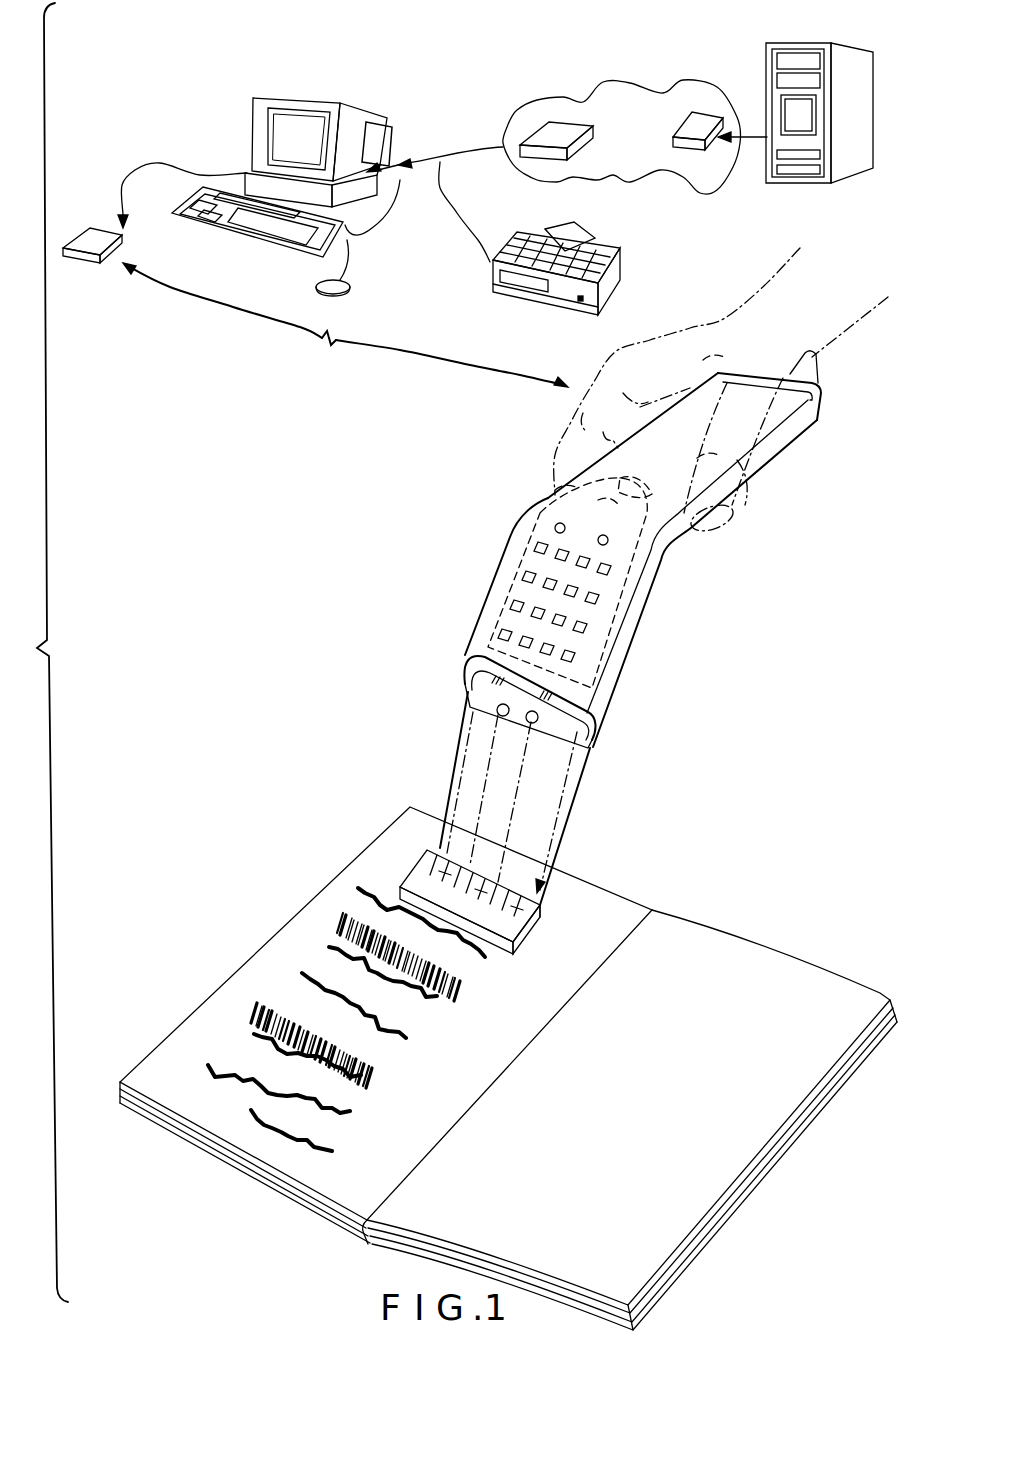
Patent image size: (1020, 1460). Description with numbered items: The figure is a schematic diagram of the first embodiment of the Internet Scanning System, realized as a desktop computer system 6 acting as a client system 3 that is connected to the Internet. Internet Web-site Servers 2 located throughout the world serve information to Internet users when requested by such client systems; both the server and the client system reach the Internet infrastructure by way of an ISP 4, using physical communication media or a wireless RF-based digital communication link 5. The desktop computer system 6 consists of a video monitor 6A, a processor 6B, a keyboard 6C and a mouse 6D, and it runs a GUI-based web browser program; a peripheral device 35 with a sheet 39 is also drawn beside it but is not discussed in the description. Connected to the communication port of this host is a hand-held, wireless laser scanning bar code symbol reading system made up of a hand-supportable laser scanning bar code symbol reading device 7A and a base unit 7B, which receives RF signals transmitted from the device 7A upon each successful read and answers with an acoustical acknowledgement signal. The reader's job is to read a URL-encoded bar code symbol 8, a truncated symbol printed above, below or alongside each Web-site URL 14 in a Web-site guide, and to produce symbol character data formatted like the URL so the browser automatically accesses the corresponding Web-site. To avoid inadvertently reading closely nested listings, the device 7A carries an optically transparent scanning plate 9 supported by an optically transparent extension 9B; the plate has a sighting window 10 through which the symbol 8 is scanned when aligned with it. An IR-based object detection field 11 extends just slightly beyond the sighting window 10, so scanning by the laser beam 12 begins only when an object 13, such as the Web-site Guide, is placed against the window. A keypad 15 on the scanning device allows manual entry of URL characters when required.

The Internet Web-site Server 2 is at (812, 183).
The client system 3 is at (44, 652).
The ISP 4 is at (578, 100).
The digital communication link 5 is at (495, 147).
The desktop computer system 6 is at (252, 68).
The video monitor 6A is at (307, 100).
The processor 6B is at (390, 112).
The keyboard 6C is at (257, 243).
The mouse 6D is at (348, 294).
The hand-supportable laser scanning bar code symbol reading device 7A is at (612, 611).
The base unit 7B is at (85, 268).
The URL-encoded bar code symbol 8 is at (330, 912).
The reading window 9 is at (497, 960).
The optically transparent extension 9B is at (557, 857).
The sighting window 10 is at (558, 975).
The IR-based object detection field 11 is at (483, 718).
The laser beam 12 is at (458, 757).
The object 13 is at (632, 911).
The Web-site URL 14 is at (308, 998).
The keypad 15 is at (547, 497).
The printer 35 is at (588, 259).
The printed sheet 39 is at (583, 230).